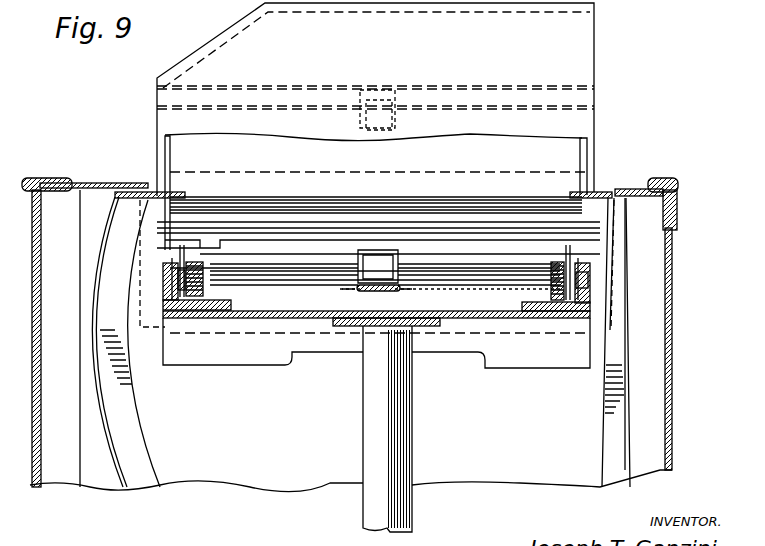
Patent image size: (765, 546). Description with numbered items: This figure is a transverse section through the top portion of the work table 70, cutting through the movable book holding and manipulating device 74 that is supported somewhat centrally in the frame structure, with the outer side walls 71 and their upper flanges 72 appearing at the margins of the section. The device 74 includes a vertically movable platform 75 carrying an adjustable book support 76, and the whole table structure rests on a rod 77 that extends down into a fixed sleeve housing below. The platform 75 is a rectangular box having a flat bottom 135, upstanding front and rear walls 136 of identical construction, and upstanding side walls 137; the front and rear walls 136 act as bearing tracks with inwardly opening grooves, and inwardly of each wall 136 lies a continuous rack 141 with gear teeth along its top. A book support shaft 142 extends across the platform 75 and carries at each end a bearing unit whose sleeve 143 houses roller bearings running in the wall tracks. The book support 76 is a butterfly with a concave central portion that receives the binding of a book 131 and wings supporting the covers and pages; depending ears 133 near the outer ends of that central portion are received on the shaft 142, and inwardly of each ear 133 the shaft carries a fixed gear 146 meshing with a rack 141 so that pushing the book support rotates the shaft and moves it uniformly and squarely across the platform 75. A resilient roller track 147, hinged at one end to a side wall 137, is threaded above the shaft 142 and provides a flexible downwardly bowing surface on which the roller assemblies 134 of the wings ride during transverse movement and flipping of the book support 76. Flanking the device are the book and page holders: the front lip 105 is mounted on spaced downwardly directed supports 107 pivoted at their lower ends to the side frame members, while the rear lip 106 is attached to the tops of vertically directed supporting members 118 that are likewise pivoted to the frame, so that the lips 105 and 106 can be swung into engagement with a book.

The work table 70 is at (687, 306).
The side wall 71 is at (40, 325).
The flange 72 is at (672, 218).
The book holding and manipulating device 74 is at (670, 78).
The platform 75 is at (460, 340).
The book support 76 is at (597, 43).
The rod 77 is at (410, 432).
The front lip 105 is at (597, 190).
The rear lip 106 is at (183, 198).
The support 107 is at (607, 425).
The supporting member 118 is at (140, 449).
The book 131 is at (323, 148).
The ear 133 is at (180, 257).
The roller 134 is at (397, 127).
The bottom 135 is at (362, 330).
The front and rear walls 136 is at (165, 320).
The side wall 137 is at (275, 272).
The rack 141 is at (196, 300).
The book support shaft 142 is at (325, 284).
The sleeve 143 is at (180, 279).
The gear 146 is at (180, 330).
The roller track 147 is at (400, 290).